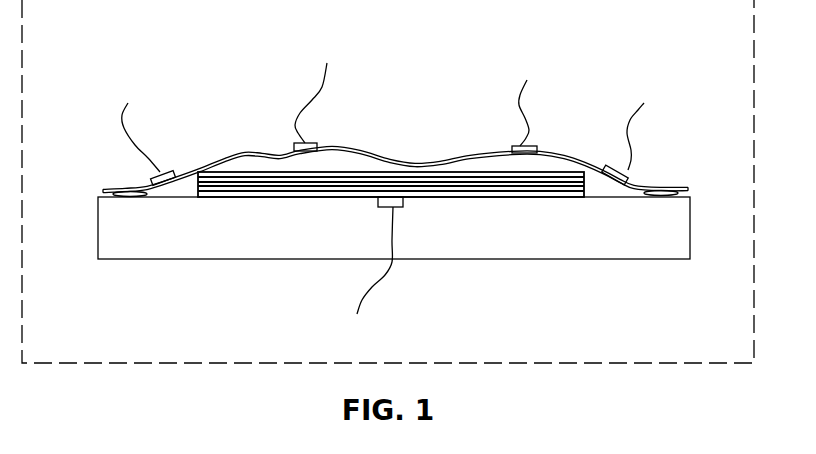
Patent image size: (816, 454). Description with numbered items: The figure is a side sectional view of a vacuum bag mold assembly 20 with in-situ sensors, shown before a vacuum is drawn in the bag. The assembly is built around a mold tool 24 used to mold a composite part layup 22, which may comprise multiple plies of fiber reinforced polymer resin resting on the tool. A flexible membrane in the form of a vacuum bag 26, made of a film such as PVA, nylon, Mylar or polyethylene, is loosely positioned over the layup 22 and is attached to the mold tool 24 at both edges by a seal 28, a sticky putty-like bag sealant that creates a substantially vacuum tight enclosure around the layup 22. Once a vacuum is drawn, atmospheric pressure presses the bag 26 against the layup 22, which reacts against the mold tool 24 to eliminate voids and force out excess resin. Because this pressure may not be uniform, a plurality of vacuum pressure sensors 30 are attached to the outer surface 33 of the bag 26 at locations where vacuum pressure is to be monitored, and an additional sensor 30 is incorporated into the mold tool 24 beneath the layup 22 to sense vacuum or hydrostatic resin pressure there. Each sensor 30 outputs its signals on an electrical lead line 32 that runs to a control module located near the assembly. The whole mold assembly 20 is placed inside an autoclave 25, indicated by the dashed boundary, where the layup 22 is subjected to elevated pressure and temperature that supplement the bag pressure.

The vacuum bag mold assembly 20 is at (195, 53).
The composite part layup 22 is at (285, 185).
The mold tool 24 is at (122, 242).
The autoclave 25 is at (624, 364).
The vacuum bag 26 is at (379, 156).
The seal 28 is at (108, 193).
The vacuum pressure sensor 30 is at (150, 178).
The electrical lead line 32 is at (118, 110).
The outer surface of the bag 33 is at (247, 153).